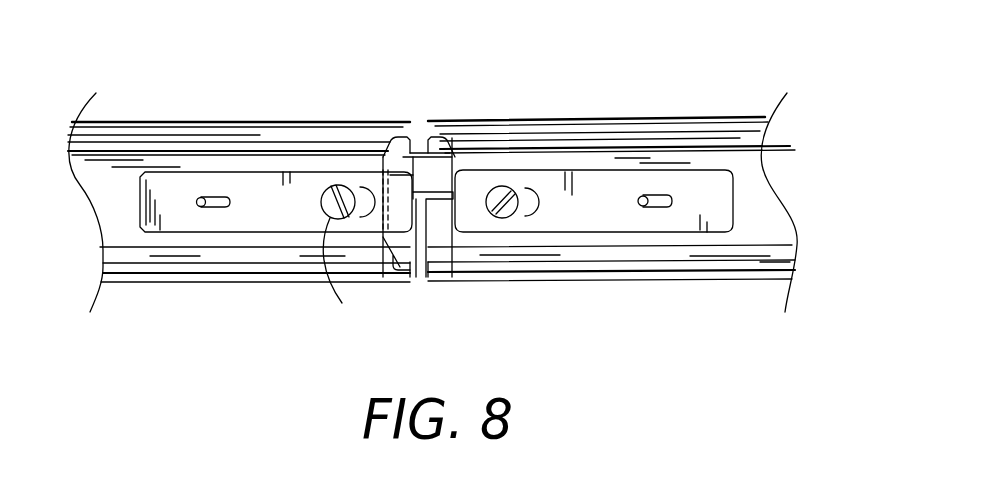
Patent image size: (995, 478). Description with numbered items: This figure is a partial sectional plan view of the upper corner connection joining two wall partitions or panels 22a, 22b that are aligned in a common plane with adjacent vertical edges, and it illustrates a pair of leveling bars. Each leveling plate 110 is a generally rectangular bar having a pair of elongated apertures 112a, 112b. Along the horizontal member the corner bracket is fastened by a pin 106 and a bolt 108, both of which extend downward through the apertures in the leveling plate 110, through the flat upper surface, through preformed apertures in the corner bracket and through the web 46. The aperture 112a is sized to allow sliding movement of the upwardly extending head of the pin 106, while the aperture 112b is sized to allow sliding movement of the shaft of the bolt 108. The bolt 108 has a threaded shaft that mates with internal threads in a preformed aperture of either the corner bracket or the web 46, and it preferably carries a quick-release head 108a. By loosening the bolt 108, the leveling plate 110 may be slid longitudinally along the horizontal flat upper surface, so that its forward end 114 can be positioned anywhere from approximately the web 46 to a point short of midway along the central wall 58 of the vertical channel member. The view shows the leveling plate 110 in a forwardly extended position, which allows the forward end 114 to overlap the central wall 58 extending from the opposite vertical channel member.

The wall panel 22a is at (163, 107).
The wall panel 22b is at (637, 118).
The leveling plate 110 is at (252, 197).
The pin 106 is at (205, 207).
The elongated aperture 112a is at (222, 207).
The quick-release head 108a is at (322, 195).
The bolt 108 is at (347, 262).
The elongated aperture 112b is at (353, 217).
The web 46 is at (405, 118).
The forward end 114 is at (413, 183).
The central wall 58 is at (468, 268).